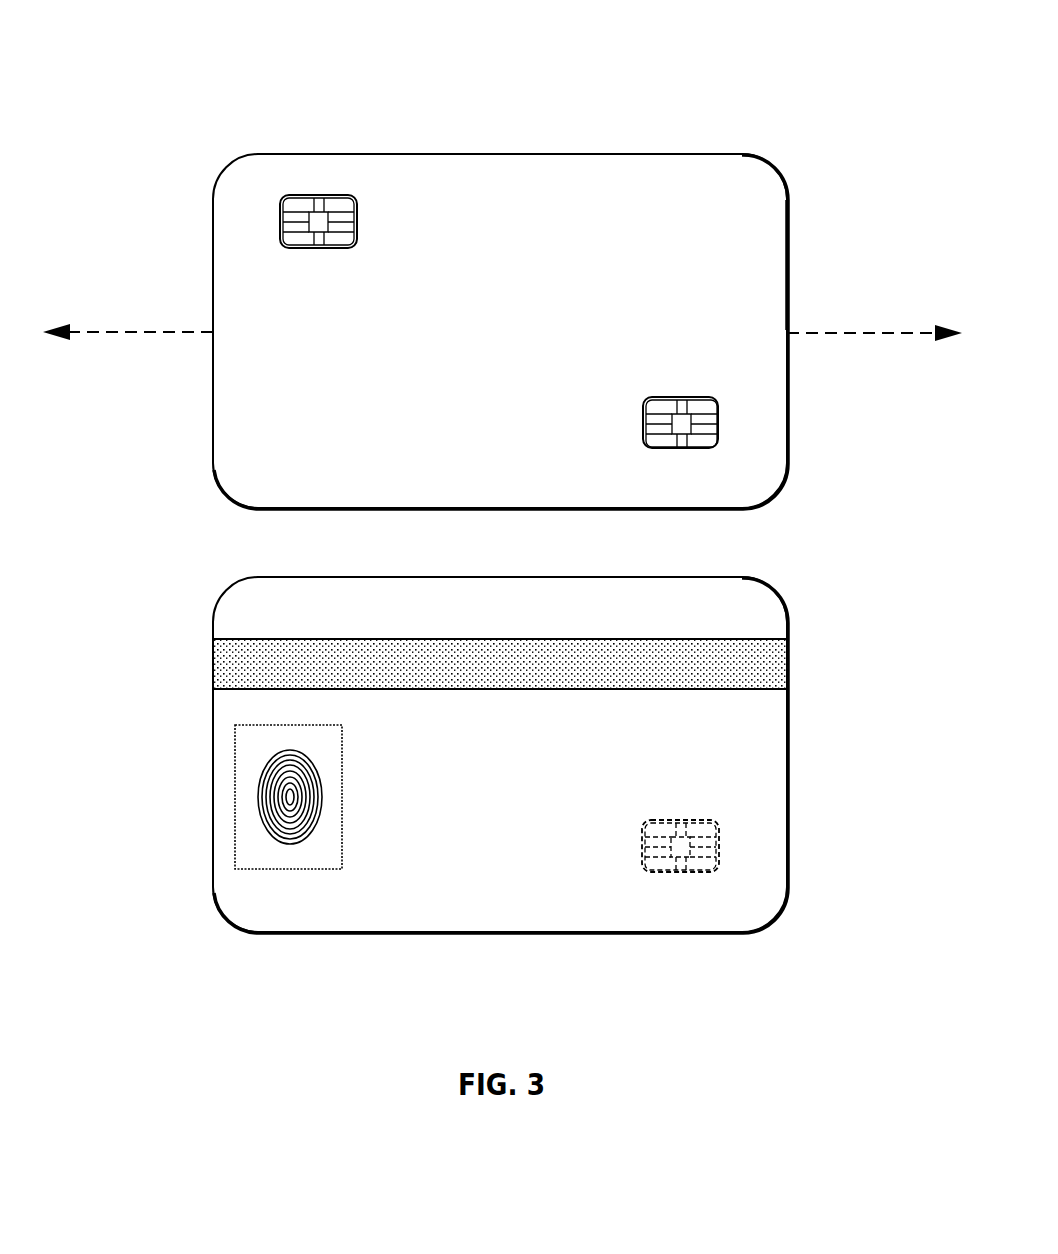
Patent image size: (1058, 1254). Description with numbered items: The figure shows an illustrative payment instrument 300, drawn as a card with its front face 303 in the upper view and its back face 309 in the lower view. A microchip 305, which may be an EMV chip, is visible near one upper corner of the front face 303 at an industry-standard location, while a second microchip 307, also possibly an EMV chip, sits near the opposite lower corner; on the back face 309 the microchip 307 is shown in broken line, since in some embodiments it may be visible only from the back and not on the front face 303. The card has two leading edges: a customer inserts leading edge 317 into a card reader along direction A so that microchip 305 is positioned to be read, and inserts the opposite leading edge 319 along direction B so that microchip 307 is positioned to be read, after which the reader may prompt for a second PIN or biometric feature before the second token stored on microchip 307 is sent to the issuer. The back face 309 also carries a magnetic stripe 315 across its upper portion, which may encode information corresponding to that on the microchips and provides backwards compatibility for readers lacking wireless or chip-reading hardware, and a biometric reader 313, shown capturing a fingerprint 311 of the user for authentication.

The payment instrument 300 is at (745, 50).
The front face 303 is at (770, 372).
The microchip 305 is at (318, 195).
The microchip 307 is at (718, 423).
The back face 309 is at (686, 915).
The fingerprint 311 is at (288, 845).
The biometric reader 313 is at (235, 795).
The magnetic stripe 315 is at (220, 666).
The leading edge 317 is at (213, 405).
The leading edge 319 is at (789, 238).